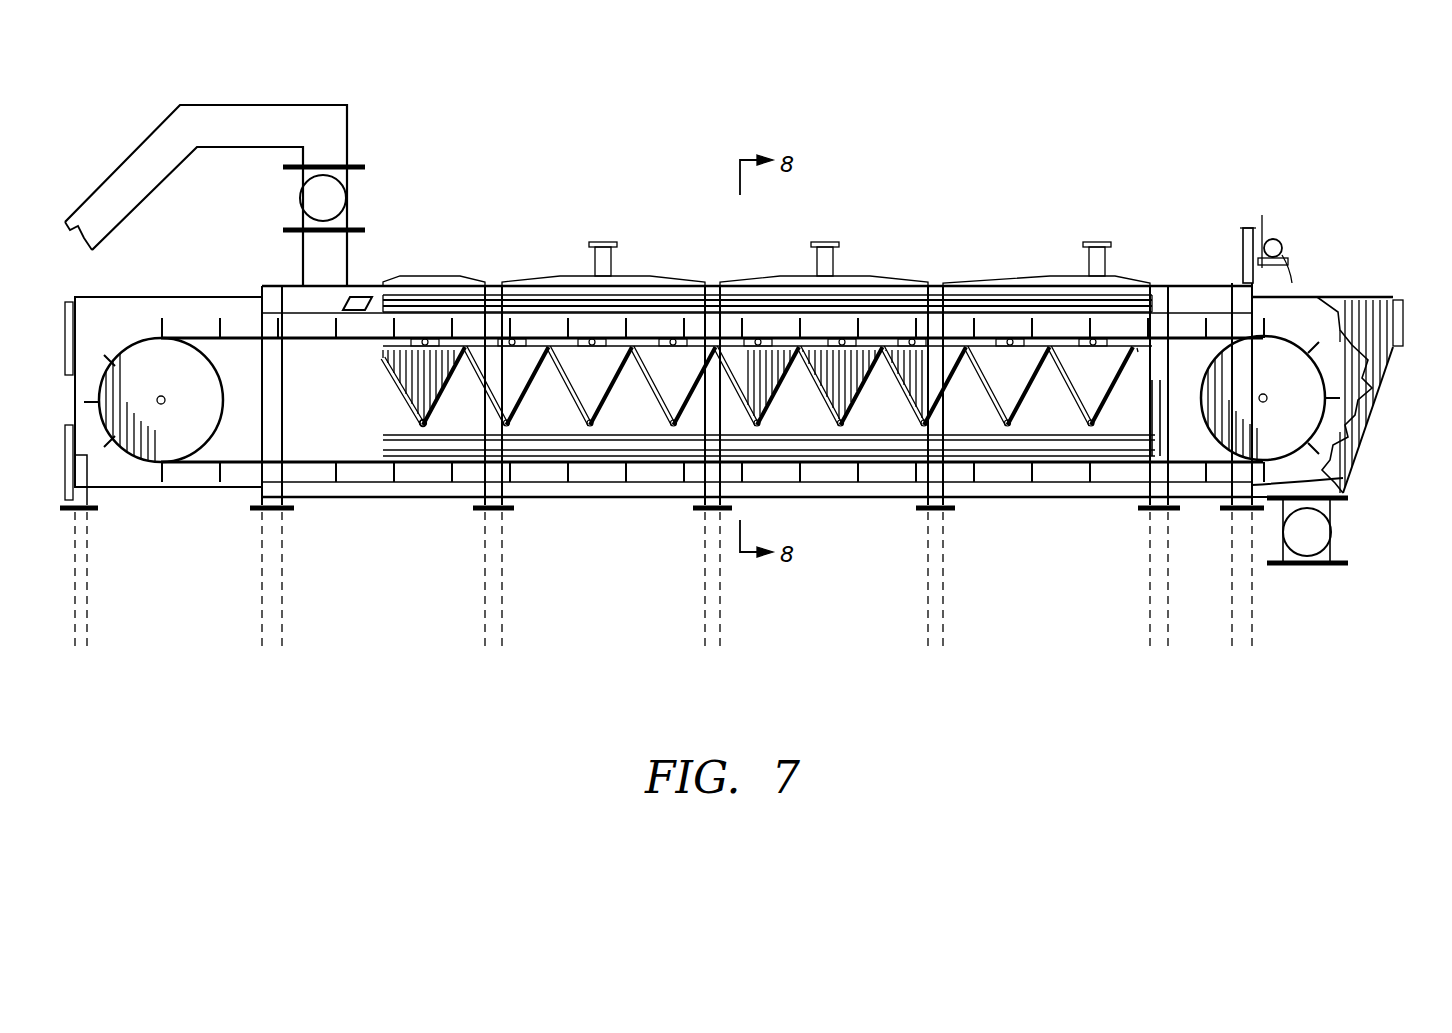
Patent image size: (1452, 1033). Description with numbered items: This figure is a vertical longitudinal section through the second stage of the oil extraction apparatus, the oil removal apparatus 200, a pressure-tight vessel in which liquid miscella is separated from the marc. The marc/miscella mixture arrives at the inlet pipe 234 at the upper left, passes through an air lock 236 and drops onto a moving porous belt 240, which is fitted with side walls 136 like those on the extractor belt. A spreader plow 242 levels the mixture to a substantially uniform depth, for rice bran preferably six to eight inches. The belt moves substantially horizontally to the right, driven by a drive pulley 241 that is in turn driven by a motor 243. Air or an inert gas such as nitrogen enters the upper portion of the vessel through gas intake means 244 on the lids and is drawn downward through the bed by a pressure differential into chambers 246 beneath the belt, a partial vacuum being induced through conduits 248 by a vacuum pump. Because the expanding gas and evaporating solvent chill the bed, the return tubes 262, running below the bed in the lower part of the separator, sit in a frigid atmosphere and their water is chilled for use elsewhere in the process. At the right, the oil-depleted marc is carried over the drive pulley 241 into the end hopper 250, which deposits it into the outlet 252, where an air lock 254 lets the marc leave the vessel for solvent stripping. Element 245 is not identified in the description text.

The side walls 136 is at (302, 330).
The oil removal apparatus 200 is at (893, 283).
The inlet pipe 234 is at (348, 130).
The air lock 236 is at (346, 200).
The porous belt 240 is at (1185, 330).
The drive pulley 241 is at (1310, 408).
The spreader plow 242 is at (360, 300).
The motor 243 is at (1288, 245).
The gas intake means 244 is at (603, 244).
The conveyor belt 245 is at (462, 305).
The chambers 246 is at (407, 383).
The conduits 248 is at (420, 425).
The end hopper 250 is at (1352, 370).
The outlet 252 is at (1340, 480).
The air lock 254 is at (1333, 540).
The return tubes 262 is at (538, 437).